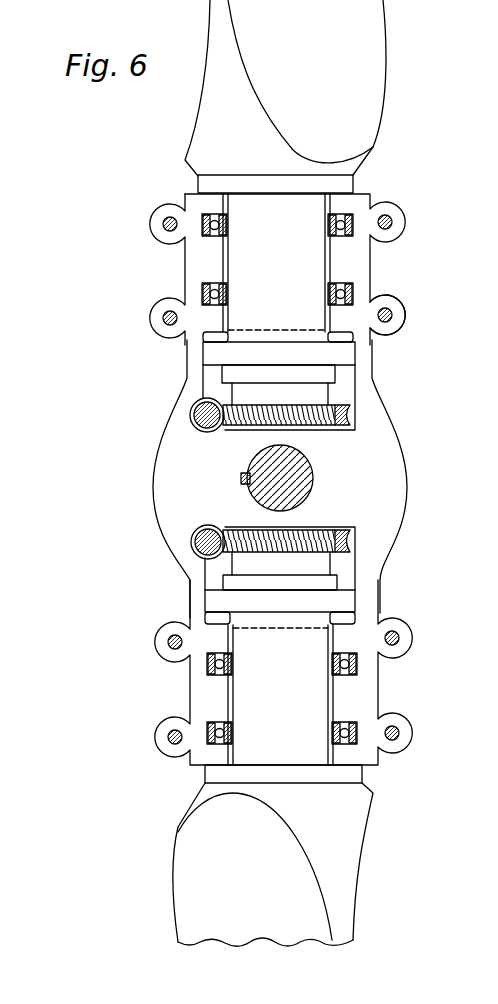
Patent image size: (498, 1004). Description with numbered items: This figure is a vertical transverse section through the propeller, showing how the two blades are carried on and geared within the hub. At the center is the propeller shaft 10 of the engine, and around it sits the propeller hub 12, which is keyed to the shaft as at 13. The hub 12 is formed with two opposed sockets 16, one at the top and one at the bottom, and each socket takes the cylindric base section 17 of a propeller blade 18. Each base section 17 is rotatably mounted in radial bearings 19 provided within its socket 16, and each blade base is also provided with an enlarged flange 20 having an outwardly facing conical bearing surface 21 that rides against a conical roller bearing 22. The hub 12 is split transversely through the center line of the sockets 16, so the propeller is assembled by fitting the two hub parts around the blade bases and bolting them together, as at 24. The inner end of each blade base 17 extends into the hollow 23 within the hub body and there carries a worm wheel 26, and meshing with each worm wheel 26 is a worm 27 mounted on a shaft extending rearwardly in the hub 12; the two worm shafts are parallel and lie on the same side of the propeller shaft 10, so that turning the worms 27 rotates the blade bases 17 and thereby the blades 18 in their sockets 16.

The propeller shaft 10 is at (303, 467).
The propeller hub 12 is at (407, 512).
The key 13 is at (240, 480).
The socket 16 is at (212, 260).
The cylindric base section 17 is at (300, 263).
The propeller blade 18 is at (368, 62).
The radial bearing 19 is at (352, 218).
The enlarged flange 20 is at (222, 362).
The conical bearing surface 21 is at (222, 350).
The conical roller bearing 22 is at (378, 338).
The hollow 23 is at (343, 398).
The bolt 24 is at (392, 222).
The worm wheel 26 is at (318, 402).
The worm 27 is at (197, 413).